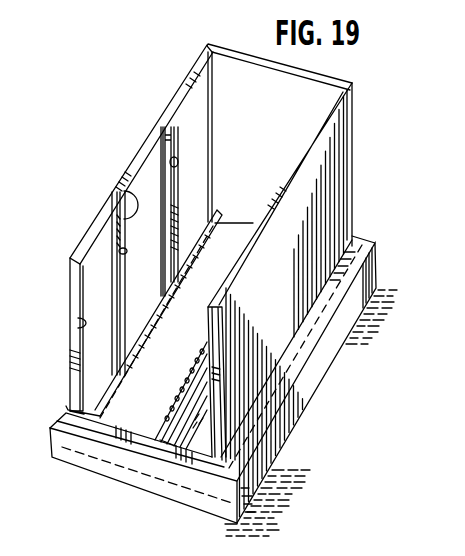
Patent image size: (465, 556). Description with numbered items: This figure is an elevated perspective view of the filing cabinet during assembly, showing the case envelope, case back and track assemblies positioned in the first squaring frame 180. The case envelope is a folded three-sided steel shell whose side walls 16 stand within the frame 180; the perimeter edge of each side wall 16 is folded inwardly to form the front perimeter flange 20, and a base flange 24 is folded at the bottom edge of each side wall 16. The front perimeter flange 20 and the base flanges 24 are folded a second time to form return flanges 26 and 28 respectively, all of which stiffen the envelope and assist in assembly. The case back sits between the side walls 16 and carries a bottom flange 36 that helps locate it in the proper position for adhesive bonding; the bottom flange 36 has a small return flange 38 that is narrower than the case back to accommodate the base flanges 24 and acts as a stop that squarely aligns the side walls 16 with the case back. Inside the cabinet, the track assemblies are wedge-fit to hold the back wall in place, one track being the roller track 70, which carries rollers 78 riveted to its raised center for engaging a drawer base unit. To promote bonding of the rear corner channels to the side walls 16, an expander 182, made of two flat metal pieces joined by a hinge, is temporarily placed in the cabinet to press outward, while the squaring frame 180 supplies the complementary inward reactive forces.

The side wall 16 is at (305, 272).
The front perimeter flange 20 is at (126, 168).
The base flange 24 is at (68, 298).
The return flange 26 is at (160, 147).
The return flange 28 is at (78, 324).
The bottom flange 36 is at (192, 455).
The return flange 38 is at (68, 408).
The roller track 70 is at (163, 188).
The roller 78 is at (110, 250).
The first squaring frame 180 is at (258, 487).
The expander 182 is at (183, 369).